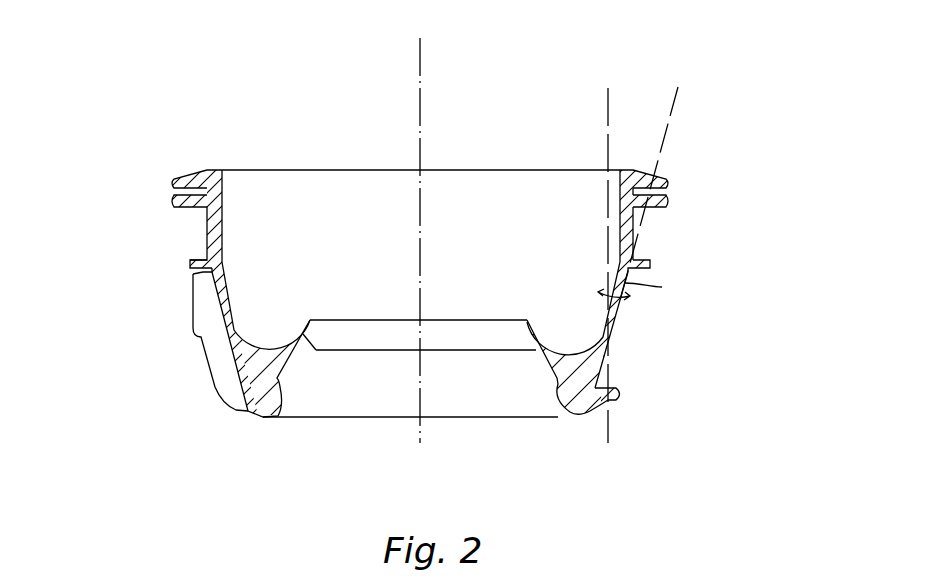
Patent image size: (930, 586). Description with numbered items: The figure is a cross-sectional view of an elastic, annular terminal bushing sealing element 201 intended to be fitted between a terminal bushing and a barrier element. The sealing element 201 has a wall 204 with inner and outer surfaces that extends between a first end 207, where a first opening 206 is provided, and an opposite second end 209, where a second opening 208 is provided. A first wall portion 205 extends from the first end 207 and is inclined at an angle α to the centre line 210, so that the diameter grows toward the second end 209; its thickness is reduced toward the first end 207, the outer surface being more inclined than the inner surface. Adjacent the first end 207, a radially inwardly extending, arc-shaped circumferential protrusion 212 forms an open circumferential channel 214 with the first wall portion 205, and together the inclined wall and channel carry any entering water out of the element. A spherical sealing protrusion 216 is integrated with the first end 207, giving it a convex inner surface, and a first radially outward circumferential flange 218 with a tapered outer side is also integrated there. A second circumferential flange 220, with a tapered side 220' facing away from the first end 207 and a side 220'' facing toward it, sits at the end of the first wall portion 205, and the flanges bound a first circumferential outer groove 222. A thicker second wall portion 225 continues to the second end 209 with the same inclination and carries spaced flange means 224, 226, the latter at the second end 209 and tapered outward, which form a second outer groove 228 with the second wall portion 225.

The terminal bushing sealing element 201 is at (648, 100).
The wall 204 is at (620, 227).
The first wall portion 205 is at (620, 313).
The first opening 206 is at (373, 429).
The first end 207 is at (260, 432).
The second opening 208 is at (327, 111).
The second end 209 is at (202, 157).
The centre line 210 is at (421, 58).
The circumferential protrusion 212 is at (540, 362).
The open circumferential channel 214 is at (267, 325).
The spherical sealing protrusion 216 is at (556, 420).
The first circumferential flange 218 is at (621, 393).
The second circumferential flange 220 is at (132, 237).
The side facing away from the first end 220' is at (152, 235).
The side facing towards the first end 220'' is at (155, 286).
The first circumferential outer groove 222 is at (195, 331).
The flange means 224 is at (668, 203).
The second wall portion 225 is at (637, 222).
The flange means 226 is at (664, 183).
The second outer groove 228 is at (172, 190).